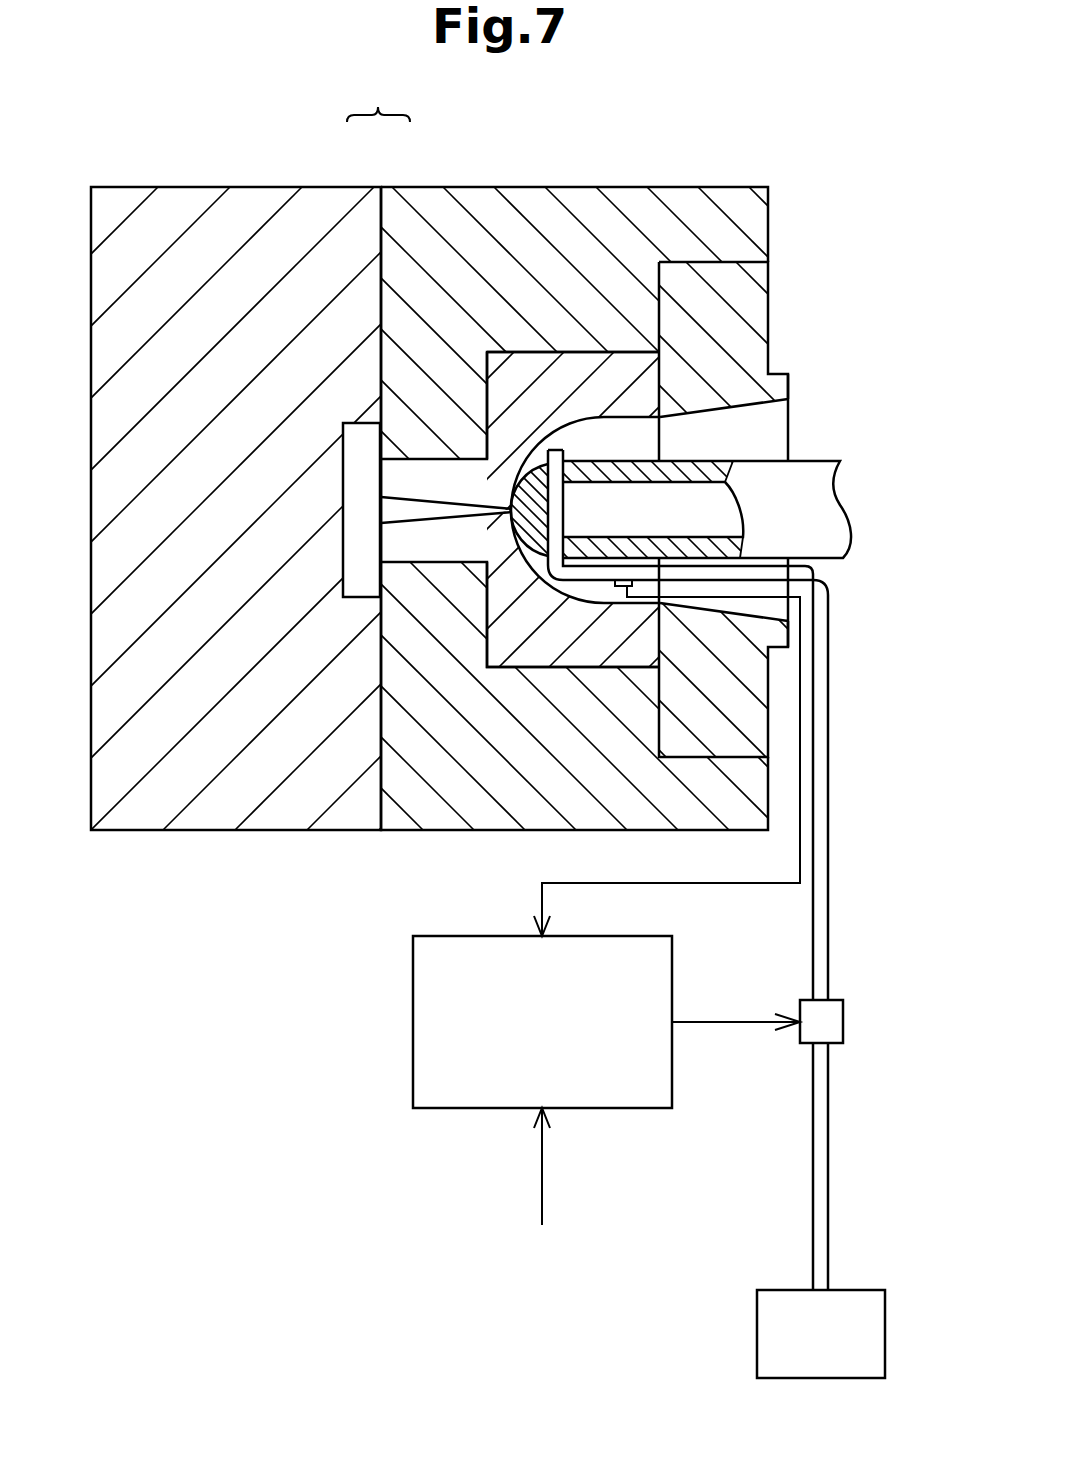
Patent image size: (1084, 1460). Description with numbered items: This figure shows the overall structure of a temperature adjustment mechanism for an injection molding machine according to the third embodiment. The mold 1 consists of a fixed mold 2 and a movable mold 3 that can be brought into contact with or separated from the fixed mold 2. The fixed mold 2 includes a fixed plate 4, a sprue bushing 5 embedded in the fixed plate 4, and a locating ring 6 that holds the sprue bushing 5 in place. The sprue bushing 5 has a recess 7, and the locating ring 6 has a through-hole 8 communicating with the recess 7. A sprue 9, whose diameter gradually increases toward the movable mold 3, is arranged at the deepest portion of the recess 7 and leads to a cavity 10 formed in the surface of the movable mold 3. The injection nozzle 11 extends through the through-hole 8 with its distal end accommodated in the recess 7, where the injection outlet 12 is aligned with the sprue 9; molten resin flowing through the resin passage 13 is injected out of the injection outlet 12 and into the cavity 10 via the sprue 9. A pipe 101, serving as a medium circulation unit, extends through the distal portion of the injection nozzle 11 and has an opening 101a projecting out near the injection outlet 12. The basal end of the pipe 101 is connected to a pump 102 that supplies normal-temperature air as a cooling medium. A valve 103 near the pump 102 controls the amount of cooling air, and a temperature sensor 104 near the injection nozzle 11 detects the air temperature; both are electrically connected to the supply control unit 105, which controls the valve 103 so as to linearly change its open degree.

The mold 1 is at (378, 96).
The fixed mold 2 is at (420, 185).
The movable mold 3 is at (347, 185).
The fixed plate 4 is at (768, 213).
The sprue bushing 5 is at (522, 357).
The locating ring 6 is at (768, 324).
The recess 7 is at (633, 417).
The through-hole 8 is at (774, 403).
The sprue 9 is at (405, 505).
The cavity 10 is at (350, 467).
The injection nozzle 11 is at (851, 488).
The injection outlet 12 is at (533, 516).
The resin passage 13 is at (667, 482).
The pipe 101 is at (828, 710).
The opening 101a is at (562, 449).
The pump 102 is at (862, 1302).
The valve 103 is at (845, 1022).
The temperature sensor 104 is at (615, 581).
The supply control unit 105 is at (413, 957).